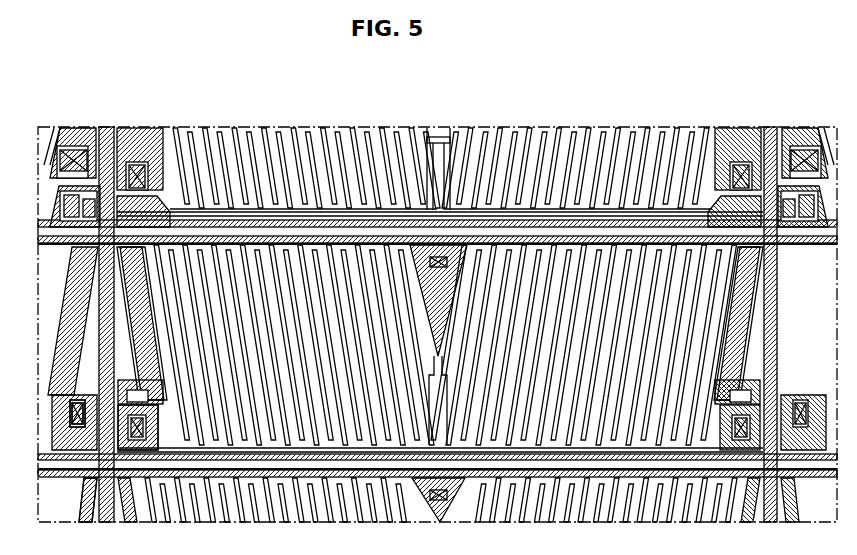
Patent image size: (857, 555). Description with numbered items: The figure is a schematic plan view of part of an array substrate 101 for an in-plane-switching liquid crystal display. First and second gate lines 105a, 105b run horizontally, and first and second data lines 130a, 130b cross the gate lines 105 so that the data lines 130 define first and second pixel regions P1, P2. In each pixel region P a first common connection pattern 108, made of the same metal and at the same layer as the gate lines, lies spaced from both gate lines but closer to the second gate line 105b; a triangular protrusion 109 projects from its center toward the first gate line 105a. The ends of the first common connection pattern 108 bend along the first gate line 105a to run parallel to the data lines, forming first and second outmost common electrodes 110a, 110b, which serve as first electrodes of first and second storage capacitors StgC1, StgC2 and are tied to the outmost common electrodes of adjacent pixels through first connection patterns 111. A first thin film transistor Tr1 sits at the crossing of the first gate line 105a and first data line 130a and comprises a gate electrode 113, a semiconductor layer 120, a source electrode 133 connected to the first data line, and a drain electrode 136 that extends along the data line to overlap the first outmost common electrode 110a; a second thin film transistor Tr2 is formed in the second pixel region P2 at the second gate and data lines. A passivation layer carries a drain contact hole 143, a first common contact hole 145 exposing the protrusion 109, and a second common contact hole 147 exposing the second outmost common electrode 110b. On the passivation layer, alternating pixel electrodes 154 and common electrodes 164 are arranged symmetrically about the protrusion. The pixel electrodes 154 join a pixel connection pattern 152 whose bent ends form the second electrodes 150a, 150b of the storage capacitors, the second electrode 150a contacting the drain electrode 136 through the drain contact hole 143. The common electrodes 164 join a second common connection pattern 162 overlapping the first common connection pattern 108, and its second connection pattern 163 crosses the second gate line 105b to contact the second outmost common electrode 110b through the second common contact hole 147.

The array substrate 101 is at (774, 94).
The data lines 130 is at (444, 323).
The first data line 130a is at (106, 128).
The second data line 130b is at (770, 522).
The pixel connection pattern 152 is at (262, 454).
The second common contact hole 147 is at (705, 472).
The gate lines 105 is at (441, 326).
The first gate line 105a is at (348, 480).
The second gate line 105b is at (566, 225).
The pixel region P is at (264, 101).
The first pixel region P1 is at (294, 271).
The second pixel region P2 is at (437, 171).
The first common connection pattern 108 is at (375, 240).
The second common connection pattern 162 is at (302, 242).
The pixel electrodes 154 is at (288, 312).
The common electrodes 164 is at (254, 320).
The first common contact hole 145 is at (453, 273).
The protrusion 109 is at (437, 156).
The first storage capacitor StgC1 is at (171, 244).
The second storage capacitor StgC2 is at (709, 242).
The first outmost common electrode 110a is at (143, 328).
The second outmost common electrode 110b is at (738, 312).
The second electrode of the first storage capacitor 150a is at (146, 312).
The second electrode of the second storage capacitor 150b is at (736, 326).
The first thin film transistor Tr1 is at (103, 341).
The second thin film transistor Tr2 is at (728, 165).
The first connection pattern 111 is at (98, 350).
The drain contact hole 143 is at (88, 378).
The gate electrode 113 is at (70, 405).
The drain electrode 136 is at (96, 417).
The source electrode 133 is at (98, 522).
The semiconductor layer 120 is at (135, 460).
The second connection pattern 163 is at (740, 478).